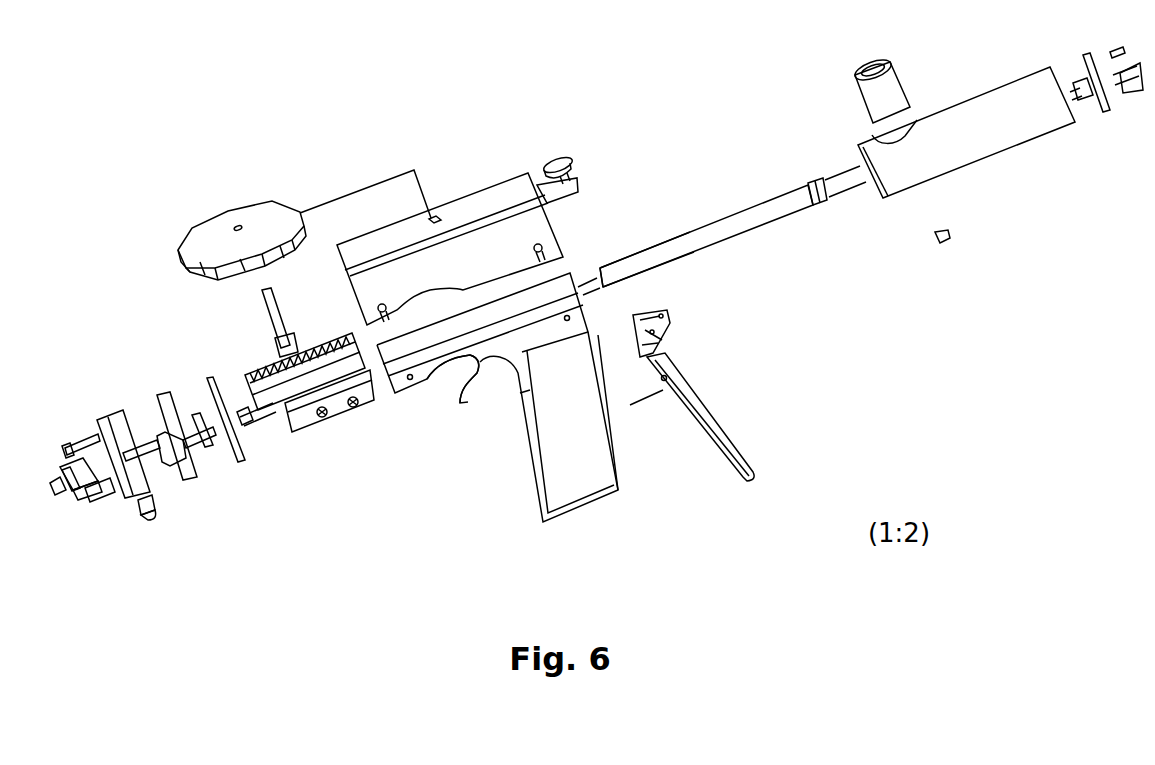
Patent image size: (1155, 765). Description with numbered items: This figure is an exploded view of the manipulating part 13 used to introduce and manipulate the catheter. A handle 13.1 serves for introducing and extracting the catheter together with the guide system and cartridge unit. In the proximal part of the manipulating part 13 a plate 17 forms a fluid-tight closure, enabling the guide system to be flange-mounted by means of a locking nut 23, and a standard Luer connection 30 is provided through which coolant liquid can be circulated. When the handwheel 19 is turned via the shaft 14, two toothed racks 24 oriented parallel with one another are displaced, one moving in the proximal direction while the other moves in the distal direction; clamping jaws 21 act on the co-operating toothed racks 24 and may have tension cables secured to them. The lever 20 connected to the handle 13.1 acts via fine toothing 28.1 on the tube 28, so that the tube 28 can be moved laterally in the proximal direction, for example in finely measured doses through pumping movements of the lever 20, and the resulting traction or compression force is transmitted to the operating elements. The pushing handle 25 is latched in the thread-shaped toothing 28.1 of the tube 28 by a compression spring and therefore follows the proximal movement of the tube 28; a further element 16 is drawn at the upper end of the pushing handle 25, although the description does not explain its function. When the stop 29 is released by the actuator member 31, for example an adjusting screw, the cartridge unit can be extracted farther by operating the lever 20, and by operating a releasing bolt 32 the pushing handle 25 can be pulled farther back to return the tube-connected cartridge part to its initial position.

The manipulating part 13 is at (373, 493).
The handle 13.1 is at (530, 467).
The shaft 14 is at (277, 317).
The connection cap 16 is at (887, 93).
The plate 17 is at (107, 417).
The handwheel 19 is at (270, 200).
The lever 20 is at (717, 397).
The clamping jaws 21 is at (337, 407).
The locking nut 23 is at (80, 507).
The toothed racks 24 is at (260, 367).
The pushing handle 25 is at (1017, 130).
The tube 28 is at (743, 217).
The thread-shaped toothing 28.1 is at (617, 260).
The stop 29 is at (827, 205).
The Luer connection 30 is at (150, 505).
The actuator member 31 is at (552, 155).
The releasing bolt 32 is at (475, 360).